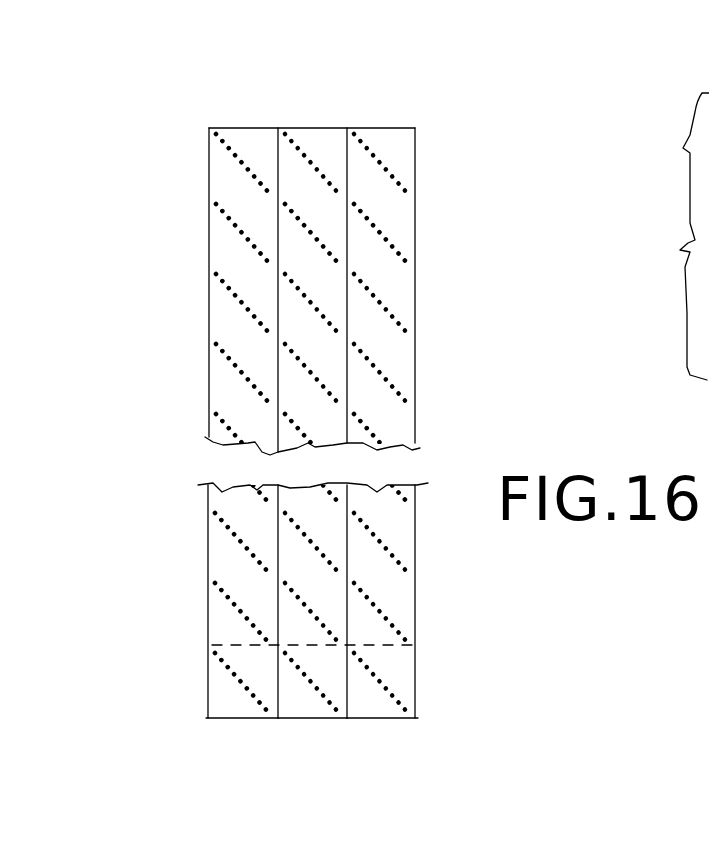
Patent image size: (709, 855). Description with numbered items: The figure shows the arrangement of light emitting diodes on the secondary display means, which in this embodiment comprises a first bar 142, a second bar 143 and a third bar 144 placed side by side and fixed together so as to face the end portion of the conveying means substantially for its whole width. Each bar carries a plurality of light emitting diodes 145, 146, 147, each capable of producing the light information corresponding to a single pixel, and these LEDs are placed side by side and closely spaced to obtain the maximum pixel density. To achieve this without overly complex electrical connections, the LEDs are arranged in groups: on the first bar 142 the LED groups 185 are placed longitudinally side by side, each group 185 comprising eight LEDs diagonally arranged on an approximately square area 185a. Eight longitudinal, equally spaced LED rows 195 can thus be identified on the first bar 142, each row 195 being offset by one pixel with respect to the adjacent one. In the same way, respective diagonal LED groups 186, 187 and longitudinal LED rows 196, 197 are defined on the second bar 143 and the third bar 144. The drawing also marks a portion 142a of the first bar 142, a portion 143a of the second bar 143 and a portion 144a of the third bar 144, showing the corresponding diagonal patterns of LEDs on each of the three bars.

The first bar 142 is at (392, 114).
The outer layer portion 142a is at (398, 222).
The second bar 143 is at (317, 113).
The intermediate layer portion 143a is at (297, 315).
The third bar 144 is at (187, 179).
The inner layer portion 144a is at (233, 403).
The light emitting diode 145 is at (393, 248).
The light emitting diode 146 is at (320, 173).
The light emitting diode 147 is at (226, 143).
The LED group 185 is at (398, 678).
The approximately square area 185a is at (385, 658).
The diagonal LED group 186 is at (299, 685).
The diagonal LED group 187 is at (230, 688).
The longitudinal LED row 195 is at (396, 727).
The longitudinal LED row 196 is at (332, 731).
The longitudinal LED row 197 is at (221, 728).